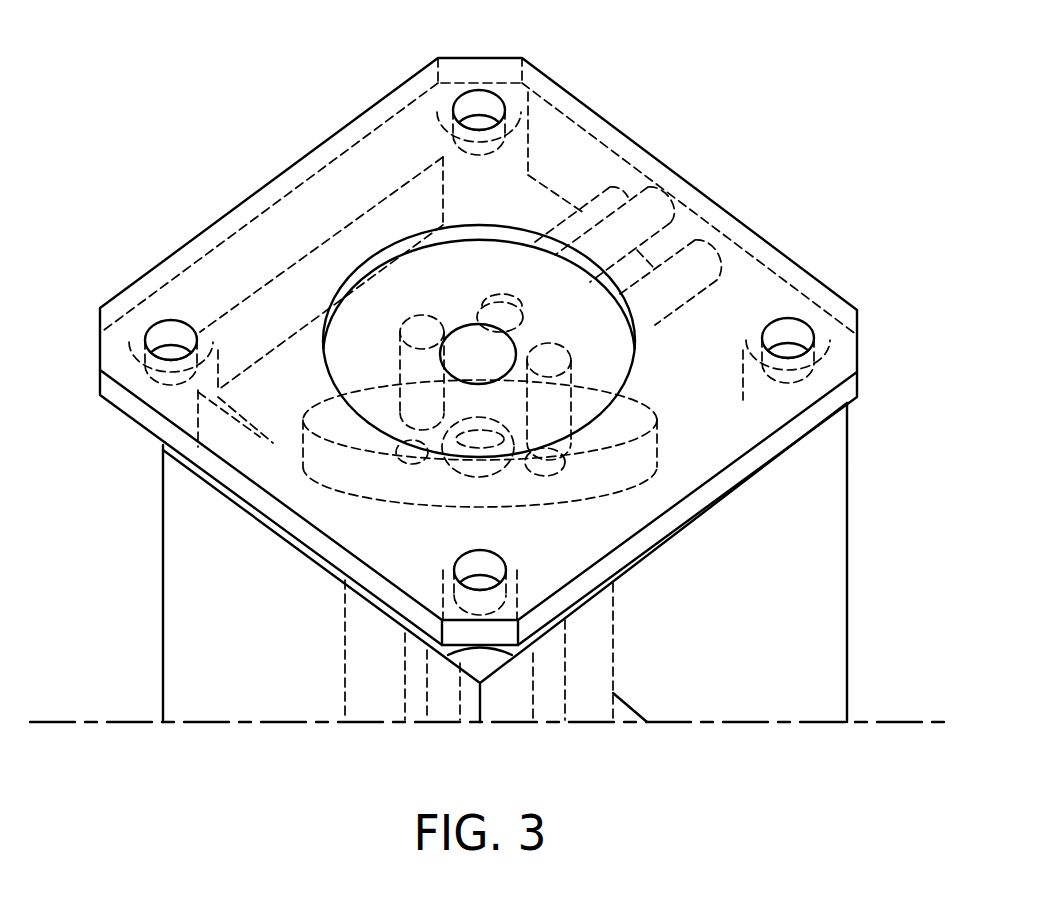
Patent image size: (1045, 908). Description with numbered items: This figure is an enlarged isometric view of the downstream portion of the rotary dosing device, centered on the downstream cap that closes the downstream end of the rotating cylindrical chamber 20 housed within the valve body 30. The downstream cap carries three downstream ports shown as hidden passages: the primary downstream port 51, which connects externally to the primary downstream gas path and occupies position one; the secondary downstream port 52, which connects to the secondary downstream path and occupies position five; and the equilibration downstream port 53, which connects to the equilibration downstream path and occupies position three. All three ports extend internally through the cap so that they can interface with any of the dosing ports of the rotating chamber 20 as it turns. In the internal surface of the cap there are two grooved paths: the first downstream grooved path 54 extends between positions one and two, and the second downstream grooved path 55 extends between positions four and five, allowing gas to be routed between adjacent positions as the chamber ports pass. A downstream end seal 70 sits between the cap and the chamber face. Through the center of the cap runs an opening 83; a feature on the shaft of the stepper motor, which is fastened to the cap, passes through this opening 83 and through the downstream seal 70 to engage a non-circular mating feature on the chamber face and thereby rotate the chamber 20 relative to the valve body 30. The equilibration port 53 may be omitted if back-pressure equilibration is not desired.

The rotating cylindrical chamber 20 is at (613, 642).
The valve body 30 is at (230, 628).
The primary downstream port 51 is at (705, 240).
The secondary downstream port 52 is at (610, 187).
The equilibration downstream port 53 is at (663, 182).
The first downstream grooved path 54 is at (657, 425).
The second downstream grooved path 55 is at (273, 443).
The downstream end seal 70 is at (303, 470).
The opening 83 is at (323, 333).